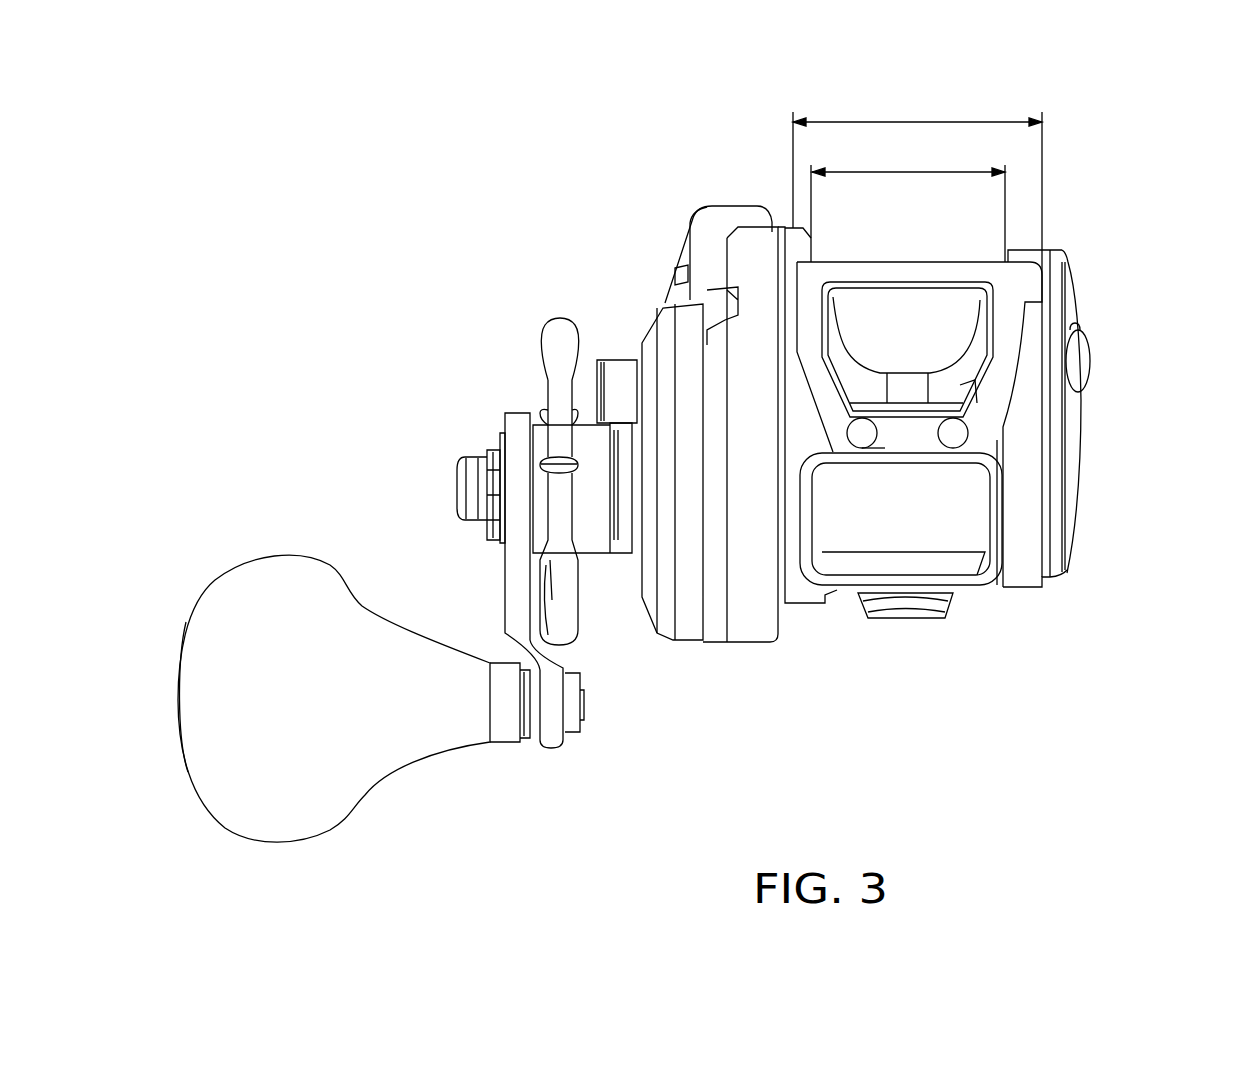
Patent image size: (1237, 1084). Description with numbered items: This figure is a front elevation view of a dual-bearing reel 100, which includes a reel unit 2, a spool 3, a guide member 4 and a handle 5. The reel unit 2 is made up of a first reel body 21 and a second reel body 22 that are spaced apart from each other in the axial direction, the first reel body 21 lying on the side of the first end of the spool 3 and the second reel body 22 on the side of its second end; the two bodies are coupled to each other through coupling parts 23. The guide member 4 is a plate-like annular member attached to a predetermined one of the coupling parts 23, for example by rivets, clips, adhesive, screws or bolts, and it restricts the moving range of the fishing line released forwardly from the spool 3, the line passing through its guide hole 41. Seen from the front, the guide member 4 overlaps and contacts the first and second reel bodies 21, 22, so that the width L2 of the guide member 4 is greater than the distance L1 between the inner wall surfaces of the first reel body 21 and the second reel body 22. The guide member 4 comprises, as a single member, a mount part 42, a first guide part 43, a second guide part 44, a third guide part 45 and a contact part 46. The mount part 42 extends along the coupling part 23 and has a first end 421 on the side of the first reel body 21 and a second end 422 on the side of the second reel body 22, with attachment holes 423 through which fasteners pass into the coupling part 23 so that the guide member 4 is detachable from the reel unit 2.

The dual-bearing reel 100 is at (484, 271).
The reel unit 2 is at (665, 655).
The first reel body 21 is at (748, 648).
The second reel body 22 is at (1028, 597).
The coupling part 23 is at (915, 442).
The spool 3 is at (910, 387).
The guide member 4 is at (957, 250).
The guide hole 41 is at (968, 397).
The mount part 42 is at (918, 443).
The first end 421 is at (842, 435).
The second end 422 is at (988, 440).
The attachment hole 423 is at (875, 442).
The first guide part 43 is at (813, 312).
The second guide part 44 is at (1012, 355).
The third guide part 45 is at (913, 274).
The contact part 46 is at (1033, 284).
The handle 5 is at (427, 733).
The distance between inner wall surfaces of the reel bodies L1 is at (908, 200).
The width of the guide member L2 is at (917, 169).